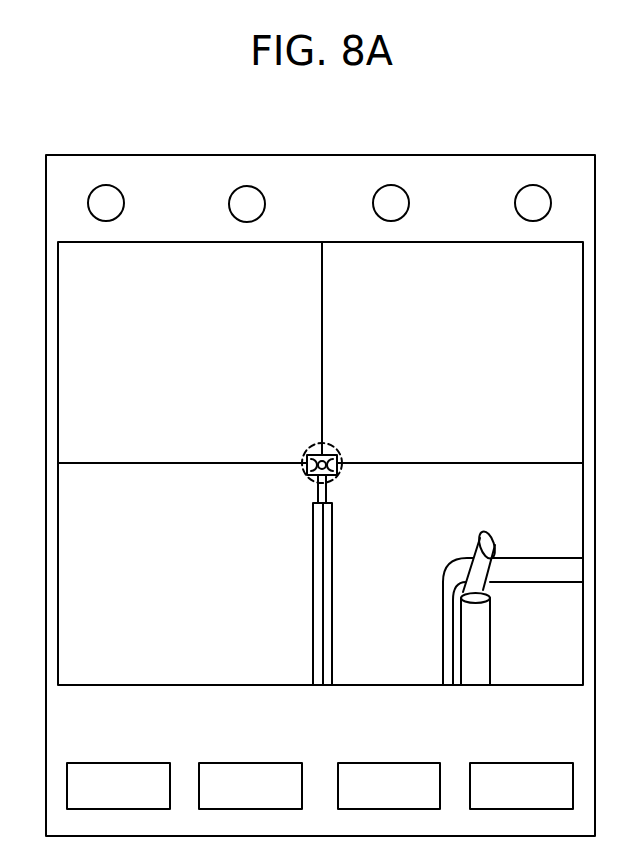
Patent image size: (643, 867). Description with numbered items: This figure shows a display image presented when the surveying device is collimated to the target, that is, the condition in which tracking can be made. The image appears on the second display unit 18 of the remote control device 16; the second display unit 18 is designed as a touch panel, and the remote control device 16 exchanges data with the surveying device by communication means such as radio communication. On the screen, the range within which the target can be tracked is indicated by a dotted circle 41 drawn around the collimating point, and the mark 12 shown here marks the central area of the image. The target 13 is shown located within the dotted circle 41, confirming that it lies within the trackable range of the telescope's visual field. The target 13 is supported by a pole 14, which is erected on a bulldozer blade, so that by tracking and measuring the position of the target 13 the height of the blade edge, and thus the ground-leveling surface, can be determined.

The partition lines 12 is at (322, 320).
The target 13 is at (338, 457).
The pole 14 is at (332, 600).
The remote control device 16 is at (435, 153).
The second display unit 18 is at (528, 298).
The dotted circle 41 is at (309, 444).